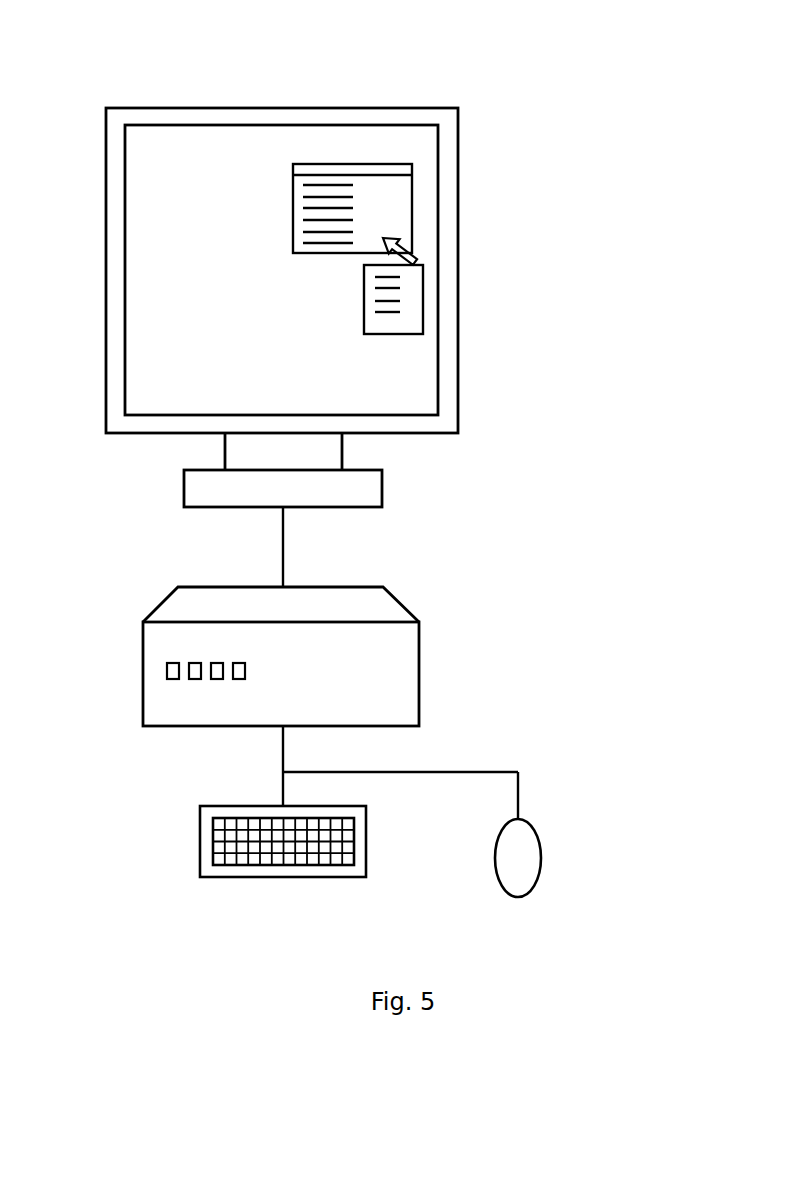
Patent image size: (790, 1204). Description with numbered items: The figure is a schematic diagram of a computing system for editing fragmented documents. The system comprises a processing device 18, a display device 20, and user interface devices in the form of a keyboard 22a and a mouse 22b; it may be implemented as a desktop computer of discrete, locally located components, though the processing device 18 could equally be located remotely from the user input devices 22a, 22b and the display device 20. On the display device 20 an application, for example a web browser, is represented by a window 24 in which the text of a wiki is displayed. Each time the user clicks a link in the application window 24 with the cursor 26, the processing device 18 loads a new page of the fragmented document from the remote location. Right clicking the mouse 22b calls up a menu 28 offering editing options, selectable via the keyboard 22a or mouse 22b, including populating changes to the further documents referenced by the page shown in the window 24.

The processing device 18 is at (143, 704).
The display device 20 is at (257, 108).
The keyboard 22a is at (200, 853).
The mouse 22b is at (541, 840).
The window 24 is at (292, 213).
The cursor 26 is at (410, 250).
The menu 28 is at (423, 312).